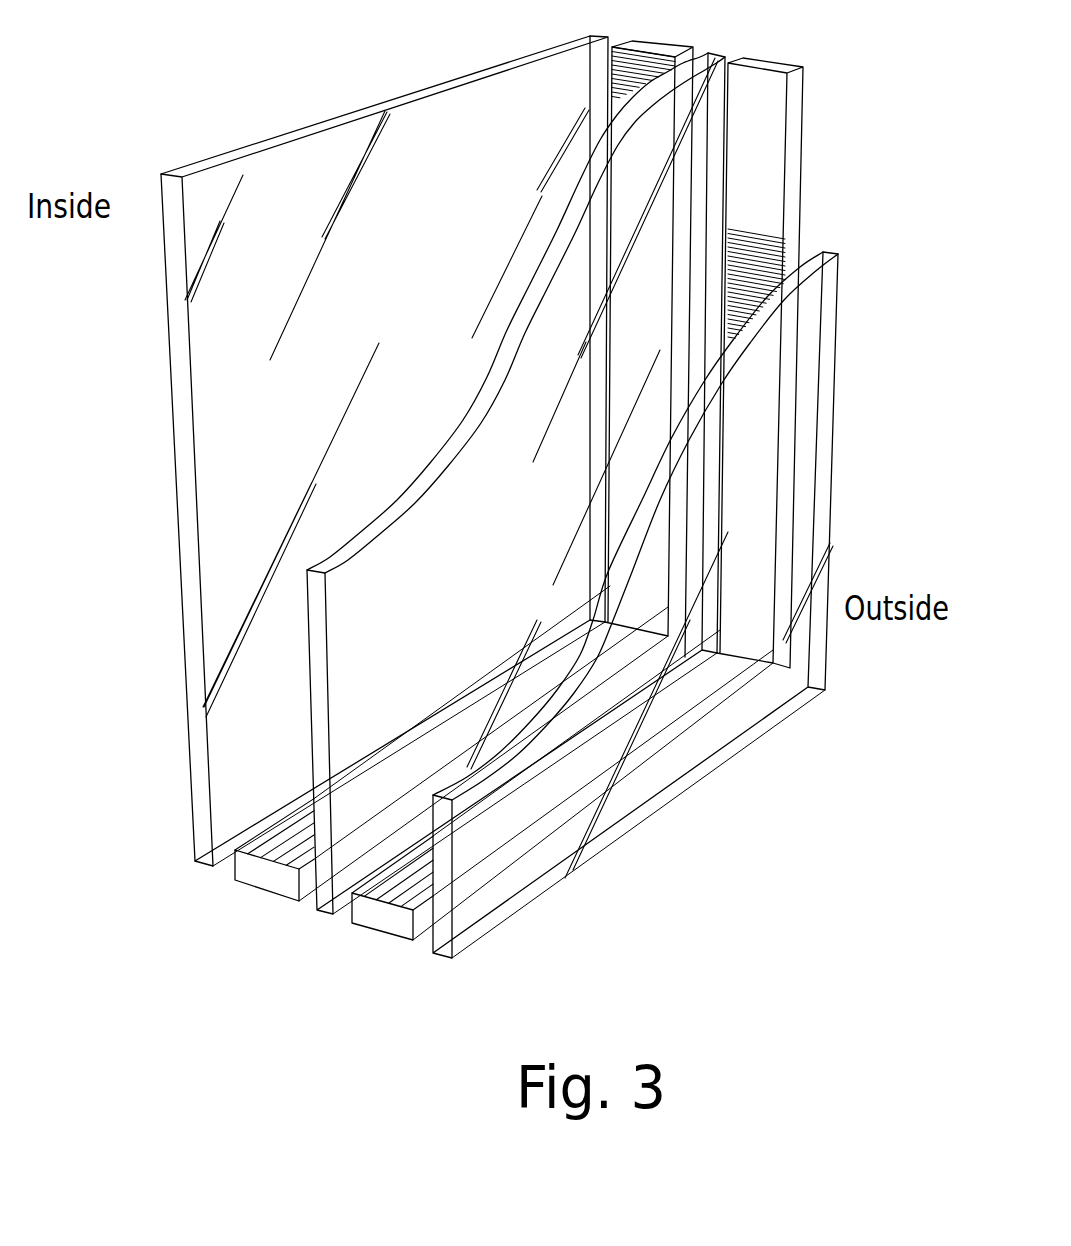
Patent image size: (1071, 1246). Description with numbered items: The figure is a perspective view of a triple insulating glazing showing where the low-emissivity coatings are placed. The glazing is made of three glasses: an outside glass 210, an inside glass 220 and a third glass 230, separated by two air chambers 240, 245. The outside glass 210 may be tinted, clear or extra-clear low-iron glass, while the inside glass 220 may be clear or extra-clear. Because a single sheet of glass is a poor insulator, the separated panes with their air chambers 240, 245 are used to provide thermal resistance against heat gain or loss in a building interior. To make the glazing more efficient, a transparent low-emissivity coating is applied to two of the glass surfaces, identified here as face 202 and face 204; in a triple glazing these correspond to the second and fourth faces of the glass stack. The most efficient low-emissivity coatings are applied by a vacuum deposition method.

The inside glass 220 is at (172, 438).
The face 4 204 is at (294, 628).
The outside glass 210 is at (457, 857).
The glass 230 is at (315, 830).
The air chamber 240 is at (410, 777).
The air chamber 245 is at (265, 777).
The face 2 202 is at (419, 890).